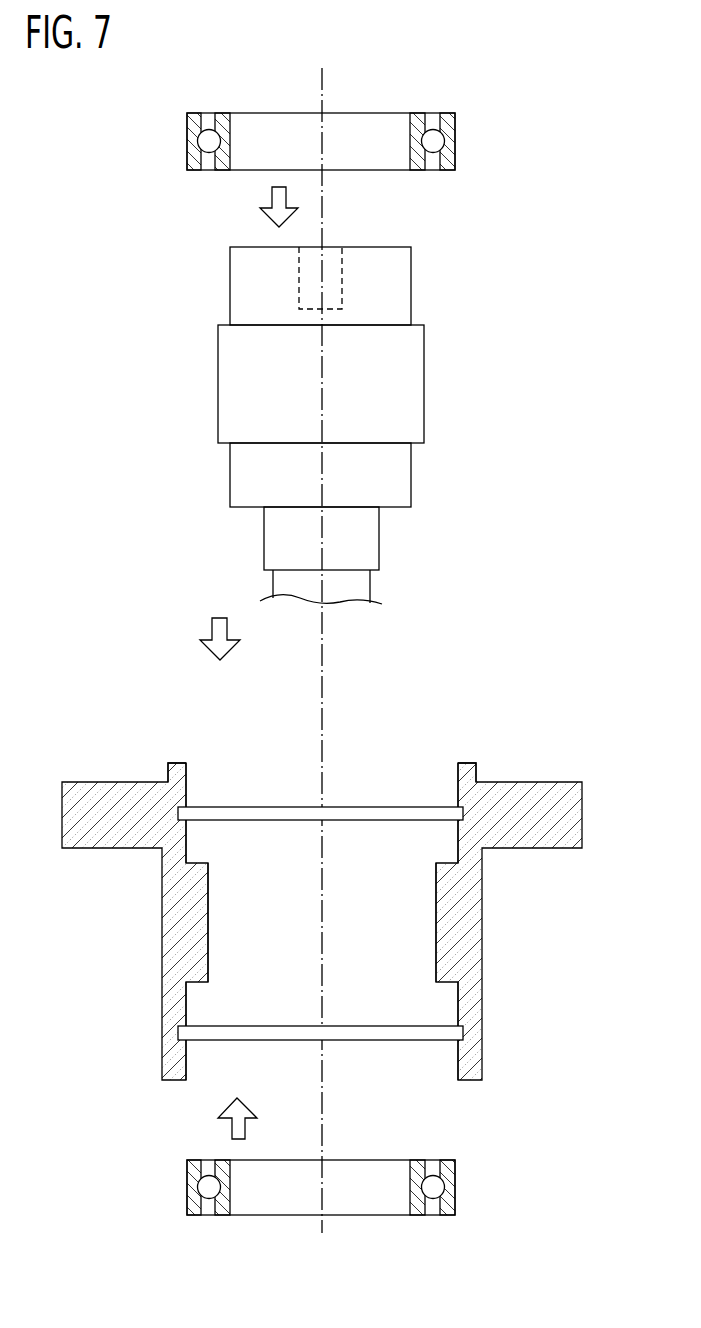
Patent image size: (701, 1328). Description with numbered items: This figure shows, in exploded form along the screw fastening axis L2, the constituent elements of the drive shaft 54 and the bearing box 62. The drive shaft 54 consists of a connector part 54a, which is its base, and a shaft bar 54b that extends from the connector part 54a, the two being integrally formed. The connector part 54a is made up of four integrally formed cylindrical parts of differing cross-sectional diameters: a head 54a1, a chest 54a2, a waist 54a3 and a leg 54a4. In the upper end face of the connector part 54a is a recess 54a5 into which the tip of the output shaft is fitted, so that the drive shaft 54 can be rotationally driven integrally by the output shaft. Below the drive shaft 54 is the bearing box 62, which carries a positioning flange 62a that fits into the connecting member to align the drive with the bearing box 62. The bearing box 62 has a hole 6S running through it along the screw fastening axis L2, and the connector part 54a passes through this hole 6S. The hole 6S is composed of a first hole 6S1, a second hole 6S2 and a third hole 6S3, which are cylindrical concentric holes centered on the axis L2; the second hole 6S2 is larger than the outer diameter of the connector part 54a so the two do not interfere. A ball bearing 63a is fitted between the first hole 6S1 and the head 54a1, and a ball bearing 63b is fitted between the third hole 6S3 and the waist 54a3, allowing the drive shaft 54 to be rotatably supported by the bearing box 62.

The screw fastening axis L2 is at (322, 633).
The ball bearing 63a is at (457, 141).
The ball bearing 63b is at (457, 1187).
The drive shaft 54 is at (304, 408).
The connector part 54a is at (328, 389).
The head 54a1 is at (393, 273).
The chest 54a2 is at (410, 363).
The waist 54a3 is at (400, 467).
The leg 54a4 is at (367, 532).
The recess 54a5 is at (335, 262).
The shaft bar 54b is at (355, 590).
The bearing box 62 is at (295, 893).
The positioning flange 62a is at (168, 775).
The hole 6S is at (363, 893).
The first hole 6S1 is at (404, 785).
The second hole 6S2 is at (418, 910).
The third hole 6S3 is at (442, 1015).